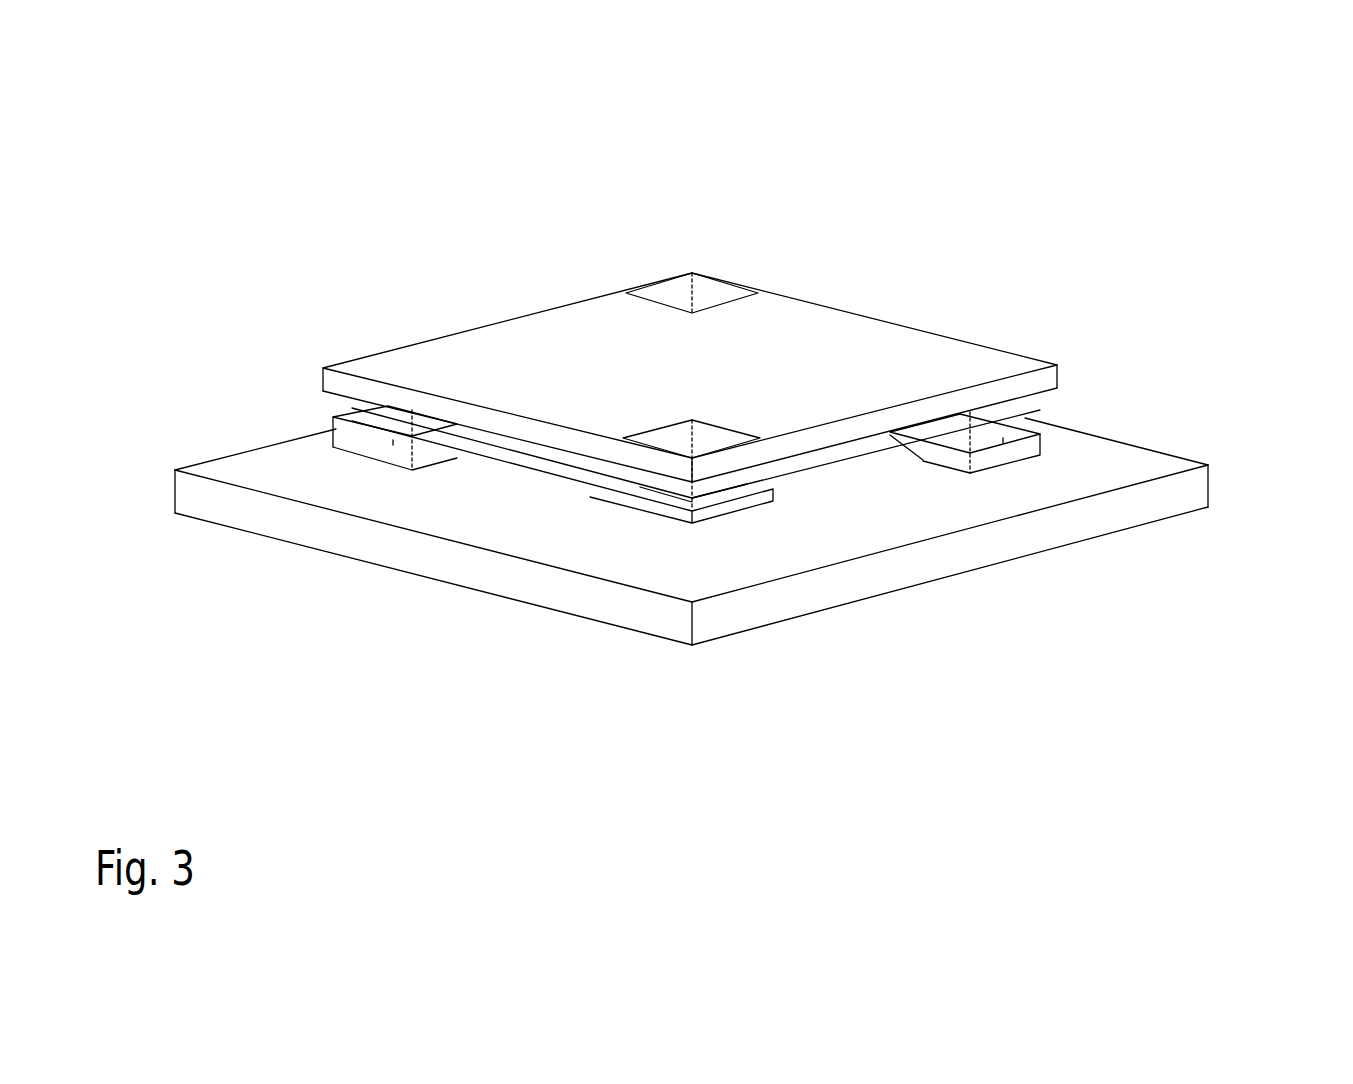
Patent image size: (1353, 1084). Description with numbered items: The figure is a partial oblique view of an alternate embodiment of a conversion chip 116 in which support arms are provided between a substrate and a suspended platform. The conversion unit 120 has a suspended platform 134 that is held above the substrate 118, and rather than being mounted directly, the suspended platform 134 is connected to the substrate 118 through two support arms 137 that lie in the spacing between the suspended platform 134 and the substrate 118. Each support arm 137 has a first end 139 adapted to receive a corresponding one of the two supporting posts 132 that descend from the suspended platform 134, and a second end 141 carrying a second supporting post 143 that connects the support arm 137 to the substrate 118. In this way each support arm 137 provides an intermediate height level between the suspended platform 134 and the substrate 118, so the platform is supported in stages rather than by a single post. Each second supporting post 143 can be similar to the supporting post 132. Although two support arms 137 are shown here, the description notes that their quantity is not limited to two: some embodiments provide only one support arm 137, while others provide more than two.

The conversion chip 116 is at (1040, 221).
The substrate 118 is at (1198, 493).
The conversion unit 120 is at (942, 359).
The supporting post 132 is at (673, 295).
The suspended platform 134 is at (727, 397).
The support arm 137 is at (1058, 417).
The first end 139 is at (723, 505).
The second end 141 is at (393, 440).
The second supporting post 143 is at (366, 451).